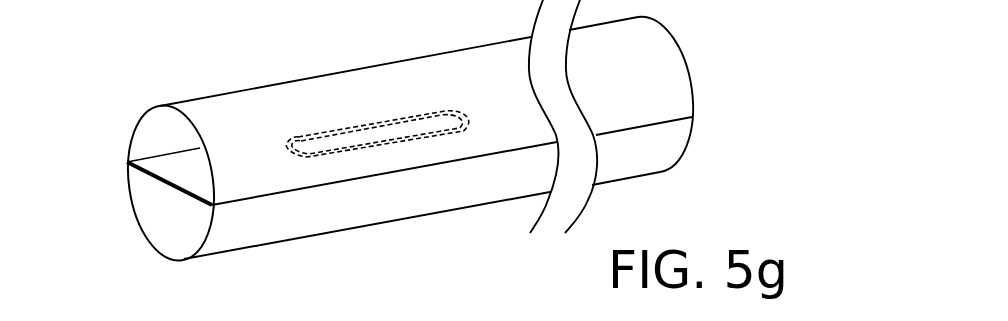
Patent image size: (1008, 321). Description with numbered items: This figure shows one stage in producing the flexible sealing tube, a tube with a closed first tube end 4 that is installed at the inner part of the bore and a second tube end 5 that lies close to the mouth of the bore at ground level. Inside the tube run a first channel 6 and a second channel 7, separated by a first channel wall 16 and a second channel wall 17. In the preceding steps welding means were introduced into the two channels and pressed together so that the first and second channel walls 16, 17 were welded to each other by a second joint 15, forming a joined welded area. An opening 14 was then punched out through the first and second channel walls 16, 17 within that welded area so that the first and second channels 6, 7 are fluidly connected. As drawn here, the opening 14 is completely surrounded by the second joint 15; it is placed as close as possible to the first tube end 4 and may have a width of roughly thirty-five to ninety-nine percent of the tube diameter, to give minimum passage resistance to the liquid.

The first tube end 4 is at (128, 190).
The second tube end 5 is at (693, 82).
The first channel 6 is at (168, 131).
The second channel 7 is at (182, 227).
The opening 14 is at (353, 142).
The second joint 15 is at (377, 120).
The first channel wall 16 is at (180, 173).
The second channel wall 17 is at (150, 201).